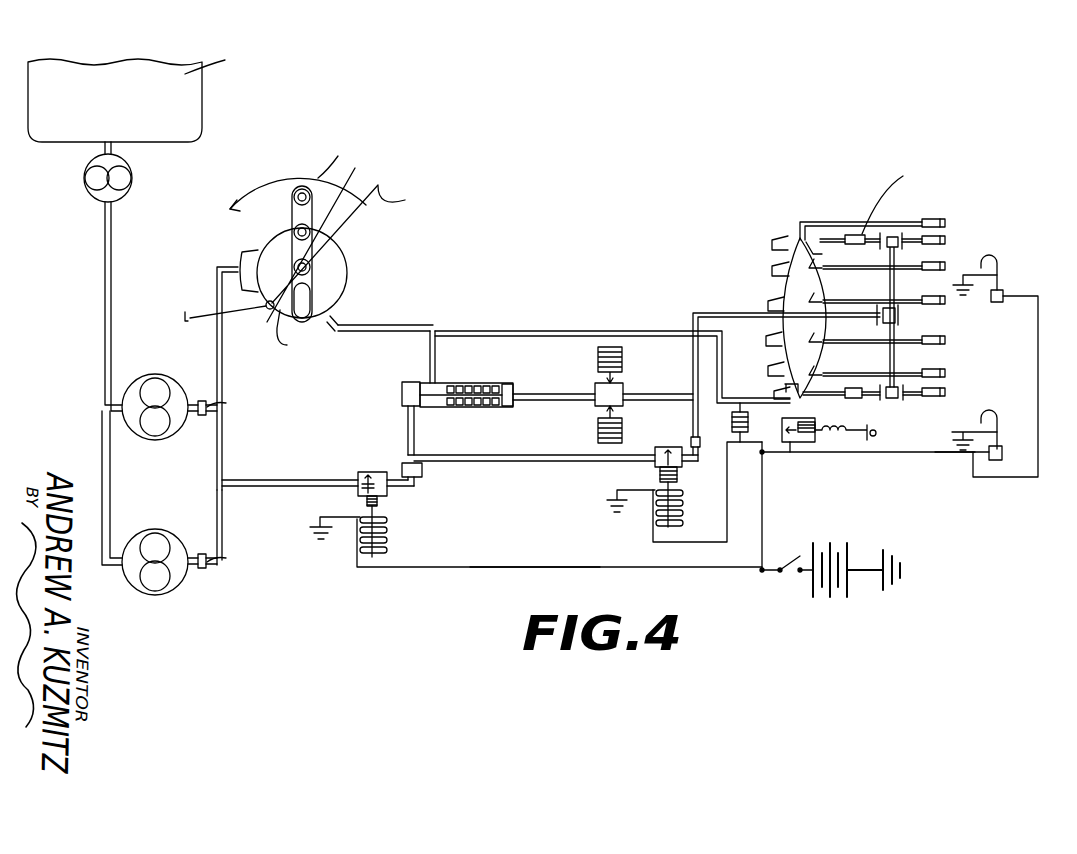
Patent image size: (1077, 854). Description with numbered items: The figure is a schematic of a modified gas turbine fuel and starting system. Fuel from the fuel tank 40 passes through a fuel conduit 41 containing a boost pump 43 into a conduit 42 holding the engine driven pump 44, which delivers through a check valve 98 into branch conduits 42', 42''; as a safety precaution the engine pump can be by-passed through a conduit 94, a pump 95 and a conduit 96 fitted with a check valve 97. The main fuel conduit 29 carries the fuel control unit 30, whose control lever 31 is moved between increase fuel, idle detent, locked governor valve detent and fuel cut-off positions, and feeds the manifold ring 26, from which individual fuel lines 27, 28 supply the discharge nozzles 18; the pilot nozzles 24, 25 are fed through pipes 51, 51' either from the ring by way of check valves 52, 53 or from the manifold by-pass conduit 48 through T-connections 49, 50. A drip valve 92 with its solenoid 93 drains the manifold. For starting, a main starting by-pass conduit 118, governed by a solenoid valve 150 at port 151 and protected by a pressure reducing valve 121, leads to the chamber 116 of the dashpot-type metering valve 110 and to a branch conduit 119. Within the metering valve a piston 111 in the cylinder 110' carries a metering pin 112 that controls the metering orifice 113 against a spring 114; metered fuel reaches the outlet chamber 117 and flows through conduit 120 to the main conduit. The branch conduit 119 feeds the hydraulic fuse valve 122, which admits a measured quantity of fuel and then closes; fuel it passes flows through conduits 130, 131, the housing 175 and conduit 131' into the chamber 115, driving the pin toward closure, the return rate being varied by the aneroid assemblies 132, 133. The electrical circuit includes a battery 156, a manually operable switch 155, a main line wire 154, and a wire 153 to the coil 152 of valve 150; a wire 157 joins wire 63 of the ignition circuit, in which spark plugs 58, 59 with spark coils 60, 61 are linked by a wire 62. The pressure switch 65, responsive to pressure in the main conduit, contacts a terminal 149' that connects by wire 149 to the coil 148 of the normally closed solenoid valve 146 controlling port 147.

The discharge nozzles 18 is at (928, 305).
The pilot nozzle 24 is at (946, 240).
The pilot nozzle 25 is at (946, 392).
The manifold ring 26 is at (782, 286).
The fuel line 27 is at (803, 222).
The fuel line 28 is at (826, 238).
The main fuel conduit 29 is at (395, 326).
The fuel control unit 30 is at (262, 237).
The control lever 31 is at (308, 213).
The fuel tank 40 is at (188, 98).
The fuel conduit 41 is at (112, 249).
The conduit 42 is at (157, 375).
The branch conduit 42' is at (242, 378).
The branch conduit 42'' is at (247, 453).
The boost pump 43 is at (132, 178).
The engine driven pump 44 is at (154, 432).
The manifold by-pass conduit 48 is at (707, 313).
The T-connection 49 is at (889, 279).
The T-connection 50 is at (896, 355).
The pipe 51 is at (946, 205).
The pipe 51' is at (932, 408).
The check valve 52 is at (856, 235).
The check valve 53 is at (853, 388).
The spark plug 58 is at (1005, 263).
The spark plug 59 is at (1000, 423).
The spark coil 60 is at (997, 303).
The spark coil 61 is at (1002, 456).
The wire 62 is at (1038, 360).
The wire 63 is at (935, 454).
The pressure switch 65 is at (746, 440).
The drip valve 92 is at (798, 420).
The solenoid 93 is at (850, 428).
The conduit 94 is at (102, 441).
The pump 95 is at (154, 588).
The conduit 96 is at (217, 508).
The check valve 97 is at (205, 569).
The check valve 98 is at (202, 416).
The metering valve 110 is at (471, 374).
The cylinder 110' is at (506, 424).
The piston 111 is at (515, 385).
The metering pin 112 is at (475, 385).
The metering orifice 113 is at (410, 390).
The spring 114 is at (456, 404).
The chamber 115 is at (515, 404).
The chamber 116 is at (406, 405).
The outlet chamber 117 is at (437, 385).
The main starting by-pass conduit 118 is at (280, 480).
The branch conduit 119 is at (545, 461).
The conduit 120 is at (430, 364).
The pressure reducing valve 121 is at (422, 470).
The hydraulic fuse valve 122 is at (691, 440).
The conduit 130 is at (722, 426).
The conduit 131 is at (603, 379).
The conduit 131' is at (581, 381).
The aneroid assembly 132 is at (598, 432).
The aneroid assembly 133 is at (622, 356).
The solenoid valve 146 is at (657, 470).
The port 147 is at (668, 455).
The coil 148 is at (655, 522).
The wire 149 is at (708, 490).
The terminal 149' is at (751, 470).
The solenoid valve 150 is at (358, 486).
The port 151 is at (370, 478).
The coil 152 is at (390, 530).
The wire 153 is at (480, 567).
The main line wire 154 is at (777, 575).
The switch 155 is at (788, 554).
The battery 156 is at (840, 542).
The wire 157 is at (762, 480).
The housing 175 is at (615, 390).